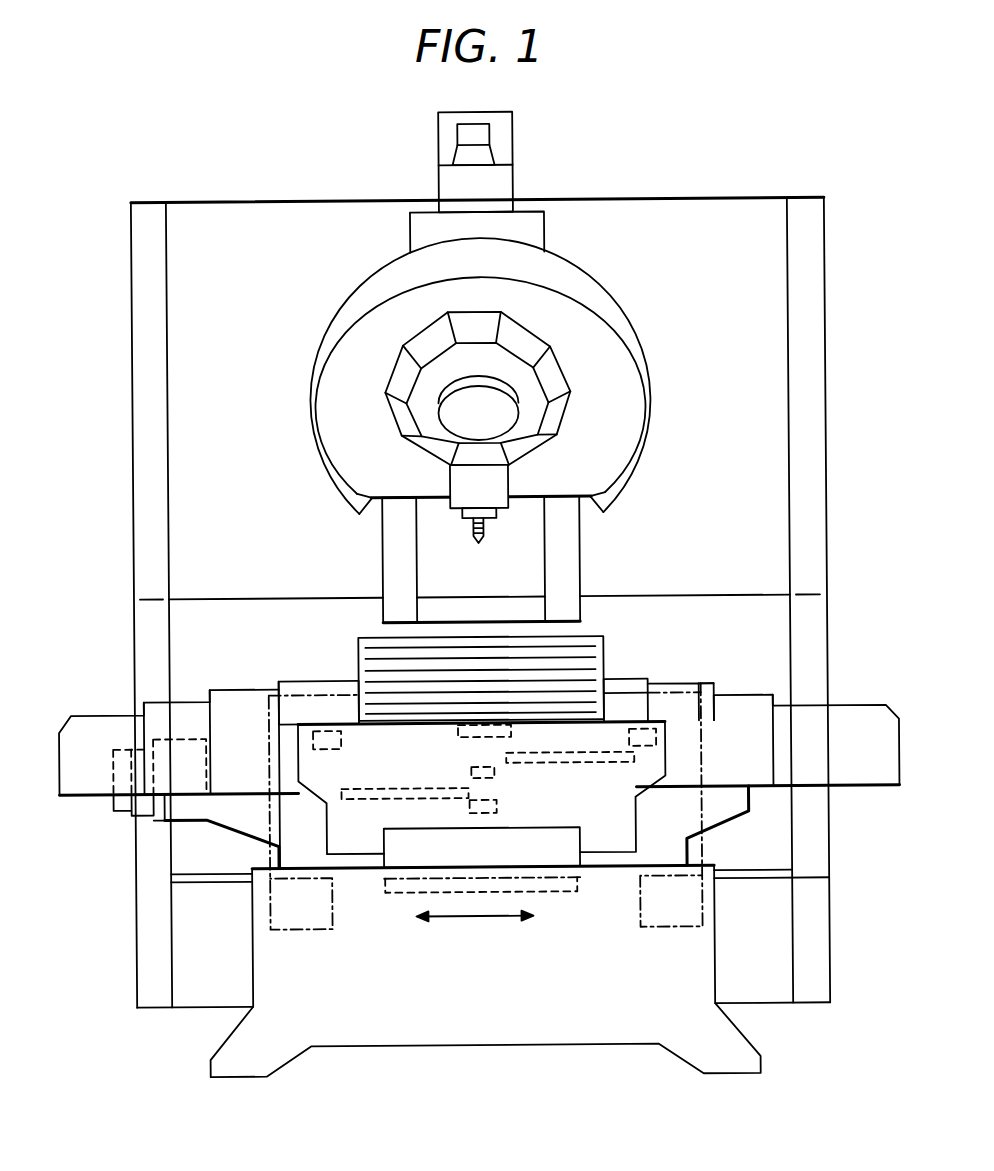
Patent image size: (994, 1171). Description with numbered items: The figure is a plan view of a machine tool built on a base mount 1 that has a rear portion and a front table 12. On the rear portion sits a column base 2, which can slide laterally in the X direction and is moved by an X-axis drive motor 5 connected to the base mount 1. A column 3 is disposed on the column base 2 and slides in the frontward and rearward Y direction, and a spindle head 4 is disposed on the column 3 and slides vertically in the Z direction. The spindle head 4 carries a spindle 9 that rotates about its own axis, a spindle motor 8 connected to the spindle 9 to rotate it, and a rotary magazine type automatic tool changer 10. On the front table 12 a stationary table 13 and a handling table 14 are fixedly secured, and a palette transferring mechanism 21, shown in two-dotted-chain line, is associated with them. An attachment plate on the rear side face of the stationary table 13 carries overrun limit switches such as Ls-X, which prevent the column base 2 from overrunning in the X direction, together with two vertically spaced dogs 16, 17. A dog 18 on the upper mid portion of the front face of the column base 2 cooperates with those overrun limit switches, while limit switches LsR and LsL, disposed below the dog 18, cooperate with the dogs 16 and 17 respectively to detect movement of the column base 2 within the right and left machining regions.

The base mount 1 is at (665, 1018).
The column base 2 is at (683, 780).
The column 3 is at (587, 637).
The spindle head 4 is at (572, 547).
The X-axis drive motor 5 is at (163, 818).
The spindle motor 8 is at (512, 185).
The spindle 9 is at (467, 520).
The rotary magazine type automatic tool changer 10 is at (555, 373).
The front table 12 is at (827, 880).
The stationary table 13 is at (313, 787).
The handling table 14 is at (700, 749).
The dog 16 is at (593, 753).
The dog 17 is at (352, 788).
The dog 18 is at (470, 722).
The palette transferring mechanism 21 is at (700, 686).
The overrun limit switch Ls-X is at (313, 743).
The limit switch LsL is at (468, 810).
The limit switch LsR is at (503, 773).